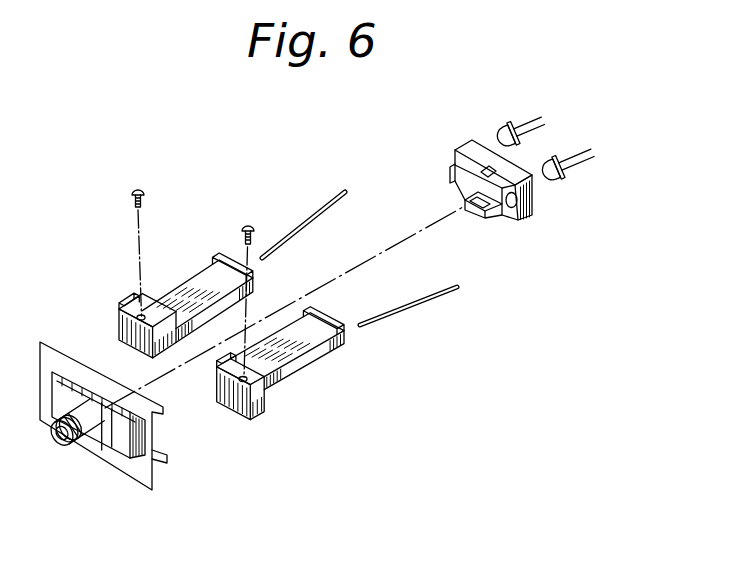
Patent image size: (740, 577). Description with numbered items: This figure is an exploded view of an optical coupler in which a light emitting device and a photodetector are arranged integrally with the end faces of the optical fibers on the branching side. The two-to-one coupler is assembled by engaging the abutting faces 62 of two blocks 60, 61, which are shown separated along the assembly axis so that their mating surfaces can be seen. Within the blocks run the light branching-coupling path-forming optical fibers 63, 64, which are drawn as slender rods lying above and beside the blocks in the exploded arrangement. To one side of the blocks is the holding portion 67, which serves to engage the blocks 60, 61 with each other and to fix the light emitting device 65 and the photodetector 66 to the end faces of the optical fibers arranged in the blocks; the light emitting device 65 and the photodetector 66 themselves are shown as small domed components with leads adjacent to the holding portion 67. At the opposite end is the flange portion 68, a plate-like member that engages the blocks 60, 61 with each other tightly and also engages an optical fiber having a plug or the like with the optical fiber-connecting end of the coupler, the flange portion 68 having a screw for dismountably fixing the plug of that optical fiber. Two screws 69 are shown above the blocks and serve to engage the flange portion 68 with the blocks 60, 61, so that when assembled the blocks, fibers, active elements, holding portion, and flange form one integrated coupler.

The block 60 is at (172, 287).
The block 61 is at (300, 387).
The abutting faces 62 is at (305, 322).
The light branching-coupling path-forming optical fiber 63 is at (312, 213).
The light branching-coupling path-forming optical fiber 64 is at (420, 303).
The light emitting device 65 is at (512, 122).
The photodetector 66 is at (577, 173).
The holding portion 67 is at (470, 207).
The flange portion 68 is at (128, 467).
The screw 69 is at (133, 192).